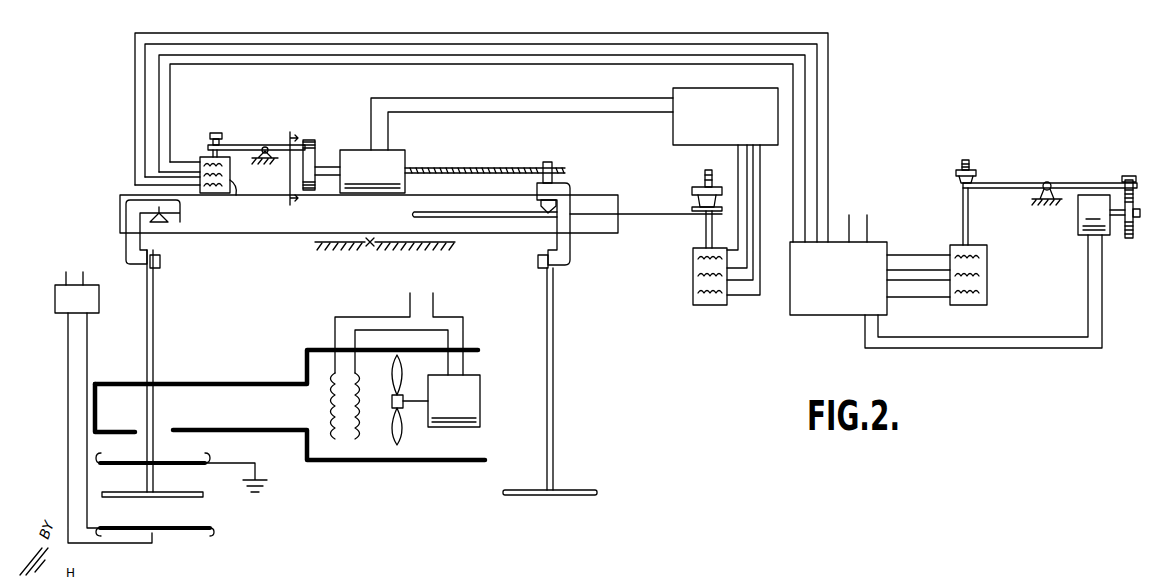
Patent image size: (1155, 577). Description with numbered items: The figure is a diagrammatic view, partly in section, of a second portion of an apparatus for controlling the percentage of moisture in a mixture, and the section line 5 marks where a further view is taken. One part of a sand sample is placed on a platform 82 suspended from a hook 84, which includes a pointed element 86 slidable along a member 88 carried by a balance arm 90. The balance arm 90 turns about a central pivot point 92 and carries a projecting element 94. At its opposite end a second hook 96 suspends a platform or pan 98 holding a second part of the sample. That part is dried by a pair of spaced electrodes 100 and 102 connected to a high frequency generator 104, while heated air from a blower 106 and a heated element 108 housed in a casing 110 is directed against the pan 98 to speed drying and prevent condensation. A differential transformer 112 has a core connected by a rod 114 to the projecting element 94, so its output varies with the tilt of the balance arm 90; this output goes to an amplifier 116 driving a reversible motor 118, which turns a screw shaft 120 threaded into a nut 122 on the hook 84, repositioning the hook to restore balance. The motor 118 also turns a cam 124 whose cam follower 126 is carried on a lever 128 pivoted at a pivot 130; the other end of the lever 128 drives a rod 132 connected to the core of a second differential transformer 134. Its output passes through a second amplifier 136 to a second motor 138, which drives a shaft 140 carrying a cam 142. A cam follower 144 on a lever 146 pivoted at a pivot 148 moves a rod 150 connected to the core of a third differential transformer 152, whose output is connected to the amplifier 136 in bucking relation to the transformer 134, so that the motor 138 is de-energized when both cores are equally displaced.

The section line 5- 5 is at (293, 172).
The platform 82 is at (585, 490).
The hook 84 is at (570, 250).
The pointed element 86 is at (545, 212).
The member 88 is at (495, 218).
The balance arm 90 is at (250, 234).
The central pivot point 92 is at (370, 246).
The projecting element 94 is at (660, 218).
The second hook 96 is at (160, 259).
The platform or pan 98 is at (195, 497).
The electrode 100 is at (190, 532).
The electrode 102 is at (176, 462).
The high frequency generator 104 is at (55, 300).
The blower 106 is at (450, 427).
The heated element 108 is at (333, 397).
The casing 110 is at (340, 463).
The differential transformer 112 is at (693, 290).
The rod 114 is at (705, 232).
The amplifier 116 is at (673, 133).
The motor 118 is at (412, 150).
The screw shaft 120 is at (495, 168).
The nut 122 is at (548, 162).
The cam 124 is at (303, 181).
The cam follower 126 is at (310, 140).
The lever 128 is at (240, 145).
The pivot 130 is at (265, 145).
The rod 132 is at (208, 153).
The second differential transformer 134 is at (236, 195).
The second amplifier 136 is at (818, 315).
The second motor 138 is at (1078, 230).
The shaft 140 is at (1116, 217).
The cam 142 is at (1133, 238).
The cam follower 144 is at (1128, 176).
The lever 146 is at (1080, 178).
The pivot 148 is at (1044, 185).
The rod 150 is at (963, 212).
The third differential transformer 152 is at (988, 288).